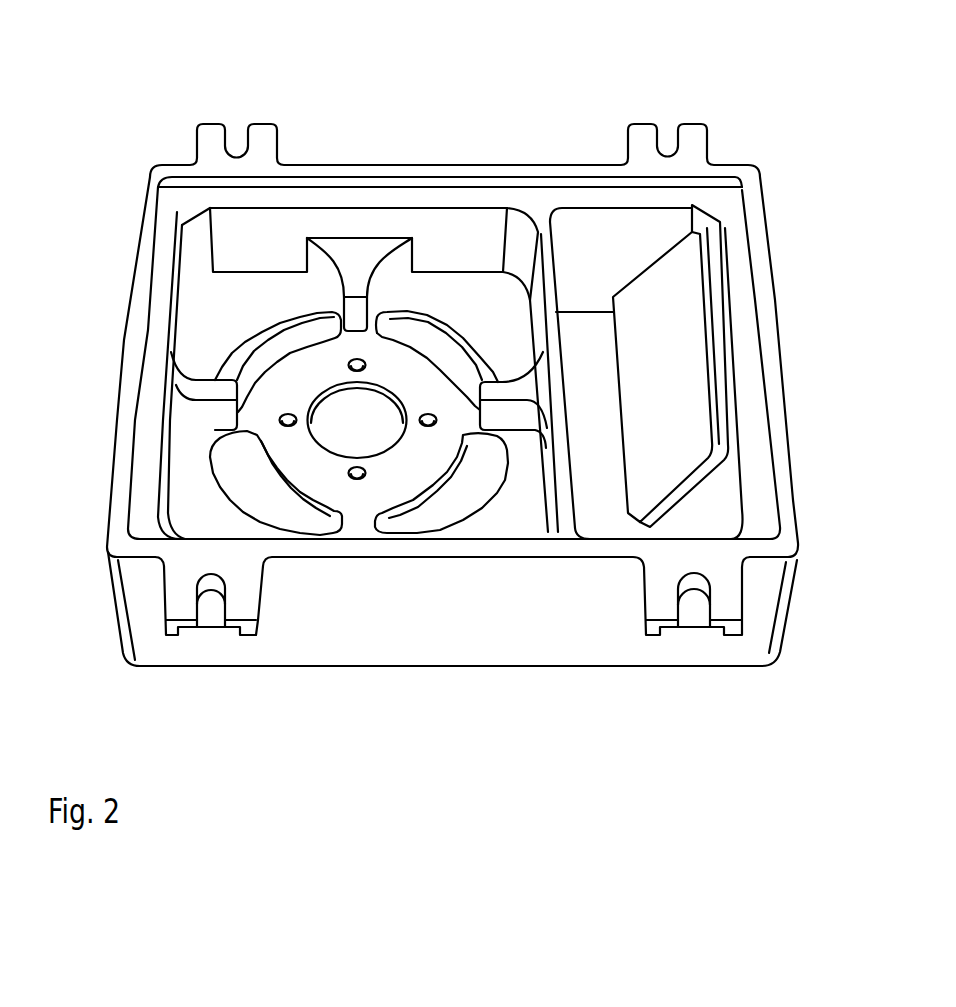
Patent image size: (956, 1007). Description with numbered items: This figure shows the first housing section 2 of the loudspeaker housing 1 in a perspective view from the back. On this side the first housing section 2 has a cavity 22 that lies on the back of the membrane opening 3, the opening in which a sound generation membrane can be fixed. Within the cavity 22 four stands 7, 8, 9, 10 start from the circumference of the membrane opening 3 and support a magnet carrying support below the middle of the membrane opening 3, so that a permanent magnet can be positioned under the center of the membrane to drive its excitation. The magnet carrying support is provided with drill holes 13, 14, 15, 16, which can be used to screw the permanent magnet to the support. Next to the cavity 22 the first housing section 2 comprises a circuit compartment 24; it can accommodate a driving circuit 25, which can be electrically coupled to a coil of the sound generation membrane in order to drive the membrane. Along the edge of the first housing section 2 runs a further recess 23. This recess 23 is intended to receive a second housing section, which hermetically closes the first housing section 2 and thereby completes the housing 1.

The housing 1 is at (756, 80).
The first housing section 2 is at (757, 207).
The membrane opening 3 is at (233, 473).
The stand 7 is at (225, 437).
The stand 8 is at (345, 340).
The stand 9 is at (355, 523).
The stand 10 is at (467, 420).
The drill hole 13 is at (361, 480).
The drill hole 14 is at (288, 428).
The drill hole 15 is at (358, 358).
The drill hole 16 is at (430, 428).
The cavity 22 is at (240, 248).
The recess 23 is at (185, 207).
The circuit compartment 24 is at (585, 338).
The driving circuit 25 is at (692, 348).